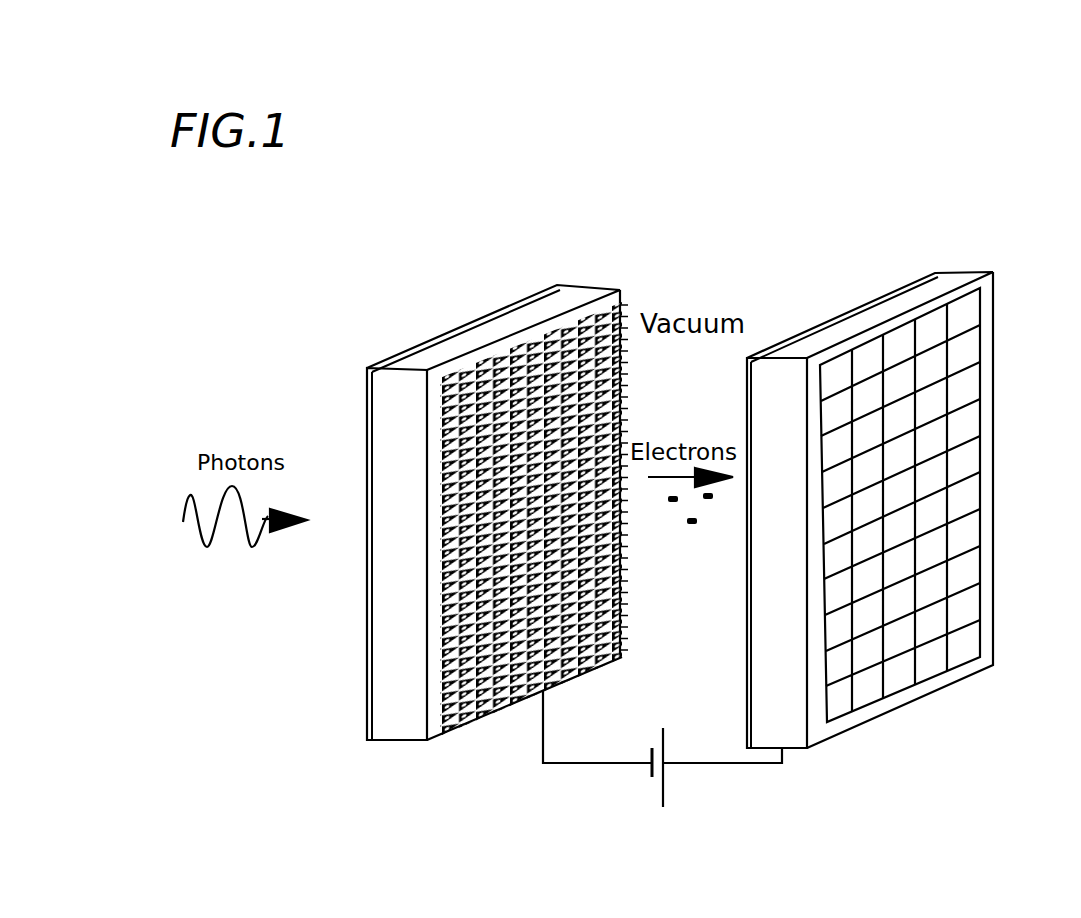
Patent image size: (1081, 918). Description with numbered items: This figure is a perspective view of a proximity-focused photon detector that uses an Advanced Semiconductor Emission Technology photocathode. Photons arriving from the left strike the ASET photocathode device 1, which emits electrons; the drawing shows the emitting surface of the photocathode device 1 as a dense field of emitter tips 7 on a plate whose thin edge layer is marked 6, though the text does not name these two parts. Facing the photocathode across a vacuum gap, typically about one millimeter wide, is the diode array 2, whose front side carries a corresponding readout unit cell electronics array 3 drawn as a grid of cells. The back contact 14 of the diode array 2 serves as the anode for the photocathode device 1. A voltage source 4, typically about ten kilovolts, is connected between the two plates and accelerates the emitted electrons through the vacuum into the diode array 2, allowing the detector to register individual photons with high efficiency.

The ASET photocathode device 1 is at (378, 630).
The diode array 2 is at (940, 275).
The readout unit cell electronics array 3 is at (898, 593).
The voltage source 4 is at (637, 810).
The photoconductive layer 6 is at (388, 358).
The field emitter tip array 7 is at (542, 337).
The back contact 14 is at (812, 328).